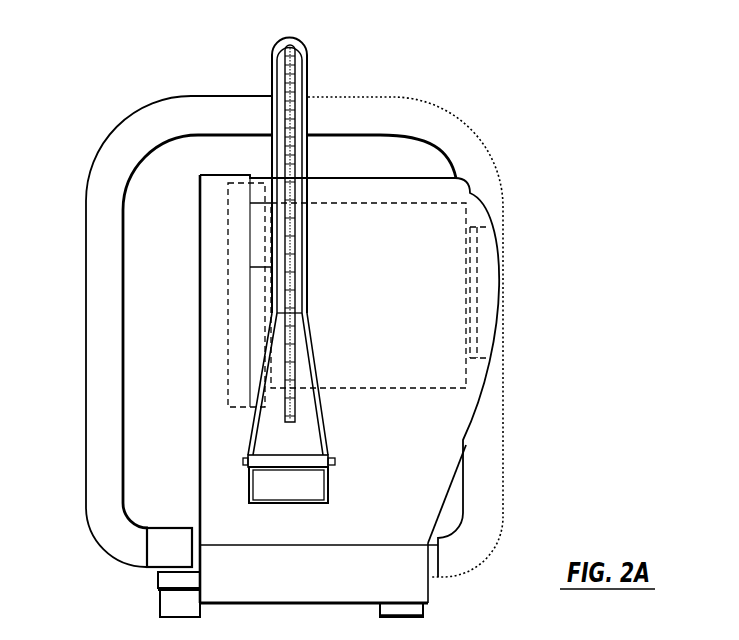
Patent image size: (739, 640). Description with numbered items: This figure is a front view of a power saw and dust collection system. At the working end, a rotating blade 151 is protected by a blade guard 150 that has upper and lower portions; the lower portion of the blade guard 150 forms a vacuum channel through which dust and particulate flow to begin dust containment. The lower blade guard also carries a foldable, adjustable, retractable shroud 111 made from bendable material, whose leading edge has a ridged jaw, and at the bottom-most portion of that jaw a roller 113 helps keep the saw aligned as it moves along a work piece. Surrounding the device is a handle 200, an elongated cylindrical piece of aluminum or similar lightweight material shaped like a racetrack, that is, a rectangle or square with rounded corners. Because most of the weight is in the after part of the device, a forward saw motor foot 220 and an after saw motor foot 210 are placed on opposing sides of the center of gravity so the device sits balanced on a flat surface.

The blade guard 150 is at (272, 60).
The rotating blade 151 is at (287, 80).
The handle 200 is at (483, 163).
The roller 113 is at (263, 462).
The shroud 111 is at (270, 488).
The after saw motor foot 210 is at (173, 603).
The forward saw motor foot 220 is at (425, 608).